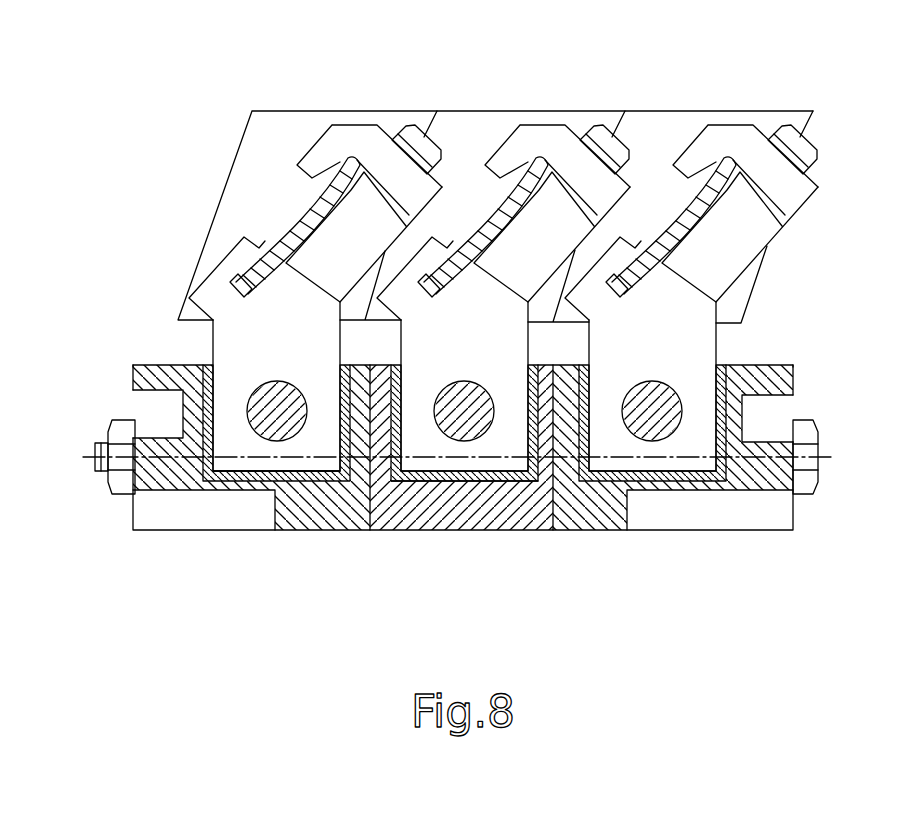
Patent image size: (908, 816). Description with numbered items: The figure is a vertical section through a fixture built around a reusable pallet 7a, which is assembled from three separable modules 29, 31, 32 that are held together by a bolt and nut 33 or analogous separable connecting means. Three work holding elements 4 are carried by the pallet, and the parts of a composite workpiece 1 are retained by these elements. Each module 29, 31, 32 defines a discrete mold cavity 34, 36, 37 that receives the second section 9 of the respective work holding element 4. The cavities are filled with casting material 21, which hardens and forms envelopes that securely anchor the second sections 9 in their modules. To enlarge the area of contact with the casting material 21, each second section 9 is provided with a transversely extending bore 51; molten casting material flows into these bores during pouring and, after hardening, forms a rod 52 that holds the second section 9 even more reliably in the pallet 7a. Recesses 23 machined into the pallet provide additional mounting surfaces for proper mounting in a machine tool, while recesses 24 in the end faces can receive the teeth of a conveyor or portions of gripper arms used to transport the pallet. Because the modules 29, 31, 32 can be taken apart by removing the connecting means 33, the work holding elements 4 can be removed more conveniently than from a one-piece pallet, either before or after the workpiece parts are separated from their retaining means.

The composite workpiece 1 is at (297, 92).
The work holding element 4 is at (207, 346).
The reusable pallet 7a is at (803, 376).
The second section 9 is at (310, 463).
The casting material 21 is at (418, 474).
The recess 23 is at (203, 508).
The recess 24 is at (150, 402).
The module 29 is at (323, 507).
The module 31 is at (490, 502).
The module 32 is at (602, 512).
The bolt and nut 33 is at (802, 471).
The mold cavity 34 is at (262, 476).
The mold cavity 36 is at (455, 474).
The mold cavity 37 is at (653, 478).
The bore 51 is at (261, 379).
The rod 52 is at (289, 398).